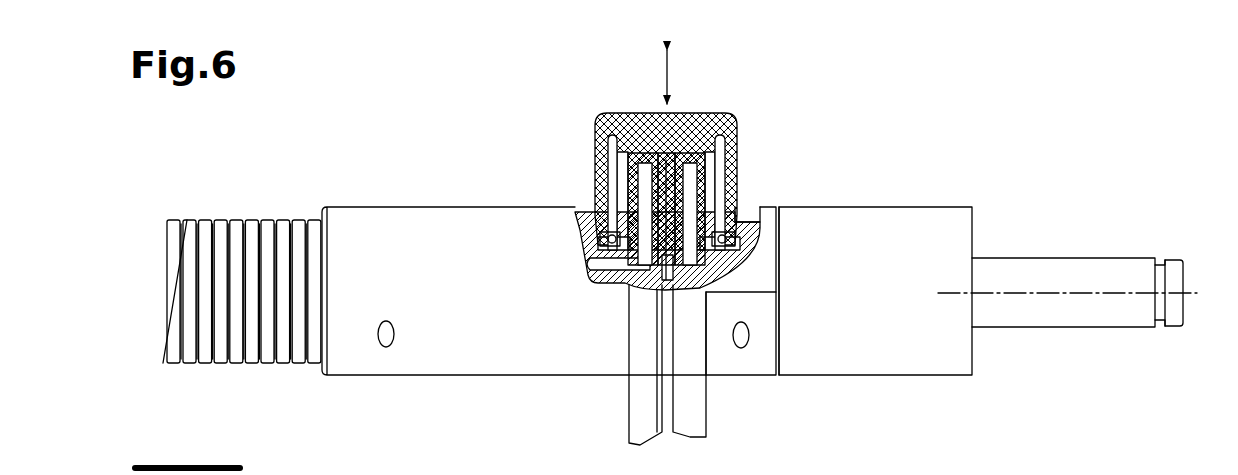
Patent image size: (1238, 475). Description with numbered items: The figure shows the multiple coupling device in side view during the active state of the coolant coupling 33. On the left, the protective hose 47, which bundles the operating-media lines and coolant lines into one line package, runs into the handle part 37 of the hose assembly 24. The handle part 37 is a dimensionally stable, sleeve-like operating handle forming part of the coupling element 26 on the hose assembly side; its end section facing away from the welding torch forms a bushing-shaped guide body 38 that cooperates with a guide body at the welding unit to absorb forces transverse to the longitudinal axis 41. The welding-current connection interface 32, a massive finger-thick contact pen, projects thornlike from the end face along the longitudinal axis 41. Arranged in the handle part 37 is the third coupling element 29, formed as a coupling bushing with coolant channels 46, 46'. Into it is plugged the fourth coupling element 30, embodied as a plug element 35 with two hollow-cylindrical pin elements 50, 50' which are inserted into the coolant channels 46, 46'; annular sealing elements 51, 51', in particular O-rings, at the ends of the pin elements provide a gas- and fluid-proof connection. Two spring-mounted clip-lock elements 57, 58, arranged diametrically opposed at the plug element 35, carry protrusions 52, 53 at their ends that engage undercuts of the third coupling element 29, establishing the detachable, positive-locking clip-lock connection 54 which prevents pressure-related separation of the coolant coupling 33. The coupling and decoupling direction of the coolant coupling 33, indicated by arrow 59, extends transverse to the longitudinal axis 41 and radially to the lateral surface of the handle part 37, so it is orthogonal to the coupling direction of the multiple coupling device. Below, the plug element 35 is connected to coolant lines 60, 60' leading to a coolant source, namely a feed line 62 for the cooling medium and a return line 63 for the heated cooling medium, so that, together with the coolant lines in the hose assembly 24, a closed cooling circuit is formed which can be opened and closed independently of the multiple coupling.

The hose assembly 24 is at (312, 188).
The coupling element 26 is at (992, 160).
The third coupling element 29 is at (729, 282).
The fourth coupling element 30 is at (607, 108).
The connection interface 32 is at (1087, 270).
The coolant coupling 33 is at (528, 113).
The plug element 35 is at (720, 113).
The handle part 37 is at (448, 225).
The guide body 38 is at (866, 345).
The longitudinal axis 41 is at (1037, 290).
The coolant channel 46 is at (711, 346).
The coolant channel 46' is at (583, 312).
The protective hose 47 is at (210, 283).
The pin element 50 is at (766, 180).
The pin element 50' is at (570, 190).
The sealing element 51 is at (712, 248).
The sealing element 51' is at (574, 277).
The protrusion 52 is at (605, 238).
The protrusion 53 is at (745, 235).
The clip-lock connection 54 is at (760, 221).
The clip-lock element 57 is at (735, 180).
The clip-lock element 58 is at (600, 180).
The coupling and decoupling direction 59 is at (665, 78).
The coolant line 60 is at (740, 368).
The coolant line 60' is at (586, 365).
The feed line 62 is at (697, 420).
The return line 63 is at (640, 425).